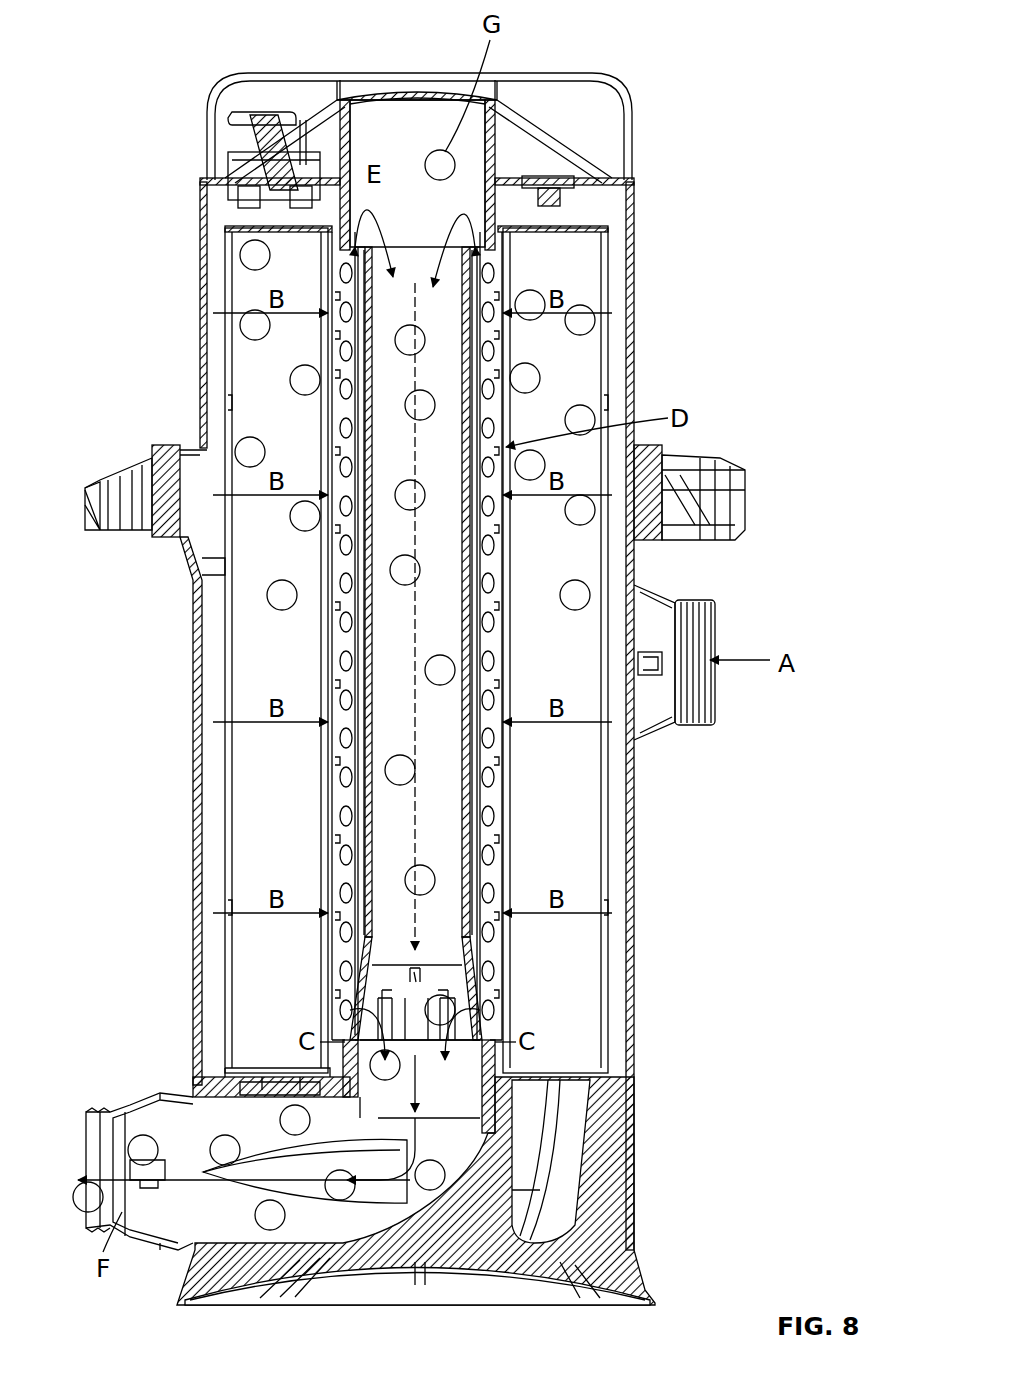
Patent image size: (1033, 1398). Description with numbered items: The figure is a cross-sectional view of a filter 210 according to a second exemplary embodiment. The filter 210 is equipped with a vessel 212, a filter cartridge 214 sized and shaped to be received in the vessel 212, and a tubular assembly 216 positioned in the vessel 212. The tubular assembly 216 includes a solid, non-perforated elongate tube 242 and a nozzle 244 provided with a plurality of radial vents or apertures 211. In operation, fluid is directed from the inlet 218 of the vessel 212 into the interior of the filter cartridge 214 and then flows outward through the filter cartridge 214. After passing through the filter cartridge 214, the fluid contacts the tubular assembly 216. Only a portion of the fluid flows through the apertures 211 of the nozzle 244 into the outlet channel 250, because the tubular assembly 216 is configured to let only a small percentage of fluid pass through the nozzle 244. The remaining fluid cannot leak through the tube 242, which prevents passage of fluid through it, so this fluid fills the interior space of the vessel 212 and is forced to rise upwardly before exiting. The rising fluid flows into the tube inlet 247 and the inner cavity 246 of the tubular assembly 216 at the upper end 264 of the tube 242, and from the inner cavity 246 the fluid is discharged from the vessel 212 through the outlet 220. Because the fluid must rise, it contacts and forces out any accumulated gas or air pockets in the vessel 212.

The filter 210 is at (662, 170).
The vessel 212 is at (194, 628).
The filter cartridge 214 is at (305, 350).
The tubular assembly 216 is at (360, 453).
The inlet 218 is at (690, 728).
The outlet 220 is at (100, 1110).
The elongate tube 242 is at (455, 408).
The nozzle 244 is at (430, 990).
The inner cavity 246 is at (450, 293).
The tube inlet 247 is at (413, 245).
The outlet channel 250 is at (437, 1102).
The upper end 264 is at (350, 290).
The radial vents or apertures 211 is at (400, 1025).